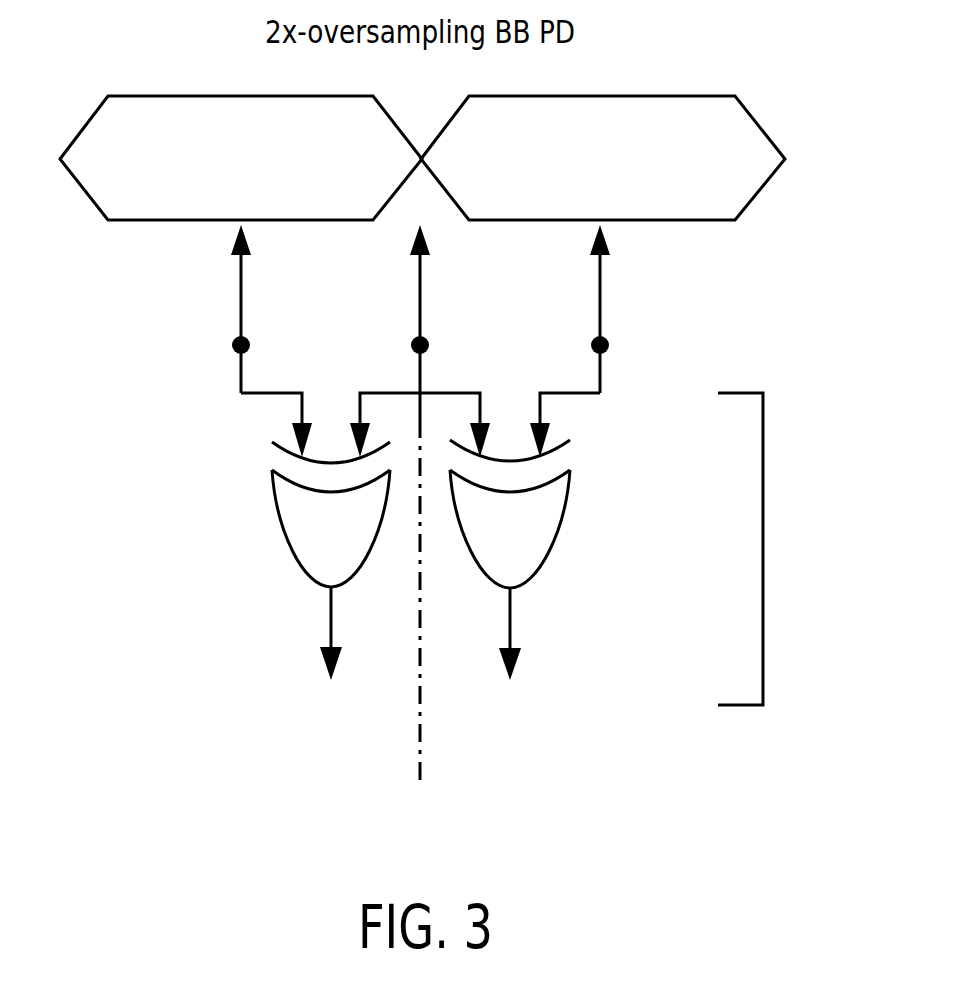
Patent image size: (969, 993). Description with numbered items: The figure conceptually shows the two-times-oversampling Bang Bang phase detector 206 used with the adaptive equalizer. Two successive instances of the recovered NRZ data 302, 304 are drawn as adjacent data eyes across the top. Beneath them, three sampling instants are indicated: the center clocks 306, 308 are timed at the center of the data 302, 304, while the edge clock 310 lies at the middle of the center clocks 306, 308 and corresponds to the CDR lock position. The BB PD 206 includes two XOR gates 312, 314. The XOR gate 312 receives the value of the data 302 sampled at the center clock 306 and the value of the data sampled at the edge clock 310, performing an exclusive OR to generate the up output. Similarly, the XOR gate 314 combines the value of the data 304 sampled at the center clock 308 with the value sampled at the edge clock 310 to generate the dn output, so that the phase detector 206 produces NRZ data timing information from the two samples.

The 2×-oversampling Bang Bang phase detector 206 is at (763, 549).
The recovered NRZ data 302 is at (130, 222).
The recovered NRZ data 304 is at (687, 222).
The center clock 306 is at (241, 373).
The center clock 308 is at (602, 372).
The edge clock 310 is at (421, 290).
The XOR gate 312 is at (287, 540).
The XOR gate 314 is at (557, 540).